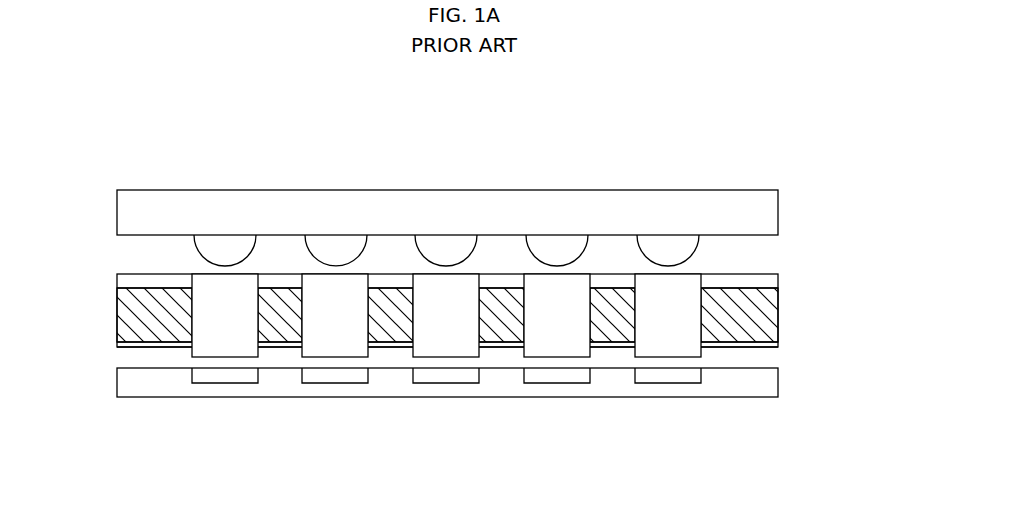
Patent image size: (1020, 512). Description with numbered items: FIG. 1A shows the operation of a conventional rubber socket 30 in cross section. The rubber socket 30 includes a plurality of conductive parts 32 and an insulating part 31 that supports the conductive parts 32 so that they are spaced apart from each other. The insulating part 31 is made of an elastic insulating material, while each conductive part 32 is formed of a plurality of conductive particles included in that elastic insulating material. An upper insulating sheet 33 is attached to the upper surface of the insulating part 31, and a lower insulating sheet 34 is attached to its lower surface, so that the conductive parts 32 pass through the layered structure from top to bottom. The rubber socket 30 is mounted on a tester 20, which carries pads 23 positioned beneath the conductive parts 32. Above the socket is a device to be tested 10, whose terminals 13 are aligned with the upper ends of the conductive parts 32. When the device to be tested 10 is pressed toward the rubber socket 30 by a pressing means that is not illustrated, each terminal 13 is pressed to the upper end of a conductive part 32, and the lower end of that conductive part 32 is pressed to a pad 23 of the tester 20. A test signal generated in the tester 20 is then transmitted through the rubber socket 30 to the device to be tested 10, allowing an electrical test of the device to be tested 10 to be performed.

The device to be tested 10 is at (796, 206).
The terminal 13 is at (557, 245).
The tester 20 is at (796, 384).
The pad 23 is at (558, 375).
The rubber socket 30 is at (796, 316).
The insulating part 31 is at (280, 320).
The conductive part 32 is at (335, 330).
The upper insulating sheet 33 is at (115, 285).
The lower insulating sheet 34 is at (115, 343).